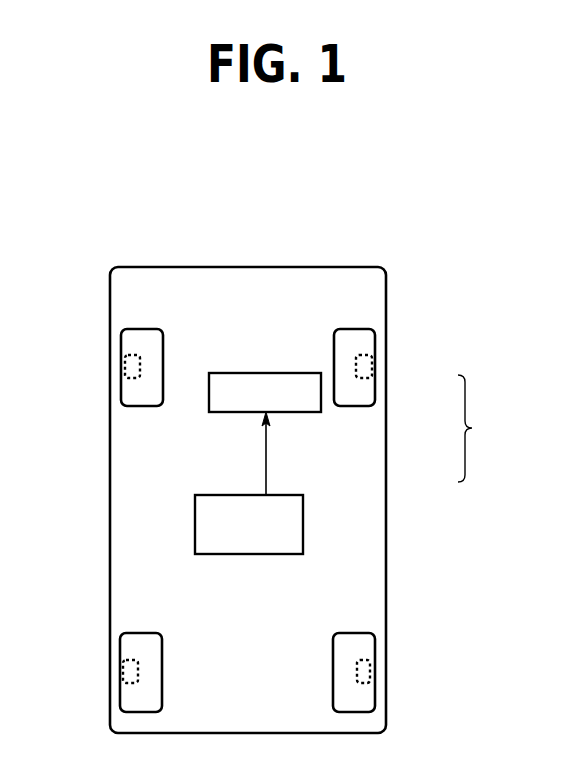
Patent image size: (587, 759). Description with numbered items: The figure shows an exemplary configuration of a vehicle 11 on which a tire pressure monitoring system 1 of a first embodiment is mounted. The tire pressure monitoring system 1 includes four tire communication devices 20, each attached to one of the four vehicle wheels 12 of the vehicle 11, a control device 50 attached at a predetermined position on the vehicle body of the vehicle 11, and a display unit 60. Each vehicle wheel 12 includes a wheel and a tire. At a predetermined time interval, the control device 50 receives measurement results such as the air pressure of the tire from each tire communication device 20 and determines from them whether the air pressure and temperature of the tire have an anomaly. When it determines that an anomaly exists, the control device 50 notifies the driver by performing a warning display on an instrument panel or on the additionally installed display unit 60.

The tire pressure monitoring system 1 is at (478, 428).
The vehicle 11 is at (245, 267).
The vehicle wheel 12 is at (126, 330).
The tire communication device 20 is at (128, 367).
The control device 50 is at (303, 523).
The display unit 60 is at (321, 407).